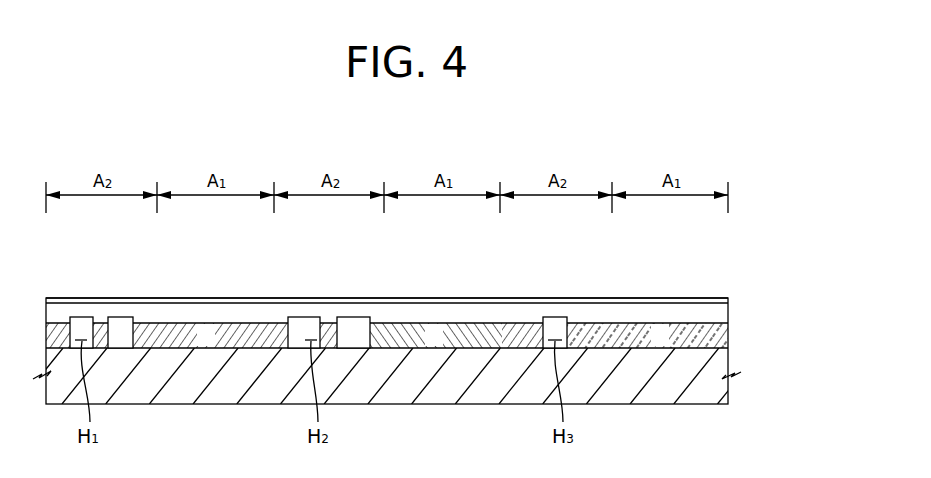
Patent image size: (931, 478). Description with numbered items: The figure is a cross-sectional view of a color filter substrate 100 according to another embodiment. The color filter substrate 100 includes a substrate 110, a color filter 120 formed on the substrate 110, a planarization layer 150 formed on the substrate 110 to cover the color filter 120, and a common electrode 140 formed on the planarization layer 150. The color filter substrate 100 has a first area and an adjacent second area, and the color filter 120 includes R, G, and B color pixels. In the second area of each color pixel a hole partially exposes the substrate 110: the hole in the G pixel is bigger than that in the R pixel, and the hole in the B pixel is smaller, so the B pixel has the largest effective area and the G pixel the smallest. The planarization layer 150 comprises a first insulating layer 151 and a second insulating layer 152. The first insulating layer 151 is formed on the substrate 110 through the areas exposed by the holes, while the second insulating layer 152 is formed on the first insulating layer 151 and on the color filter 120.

The color filter substrate 100 is at (592, 116).
The substrate 110 is at (657, 390).
The color filter 120 is at (727, 341).
The common electrode 140 is at (434, 299).
The planarization layer 150 is at (451, 293).
The first insulating layer 151 is at (82, 322).
The second insulating layer 152 is at (727, 311).